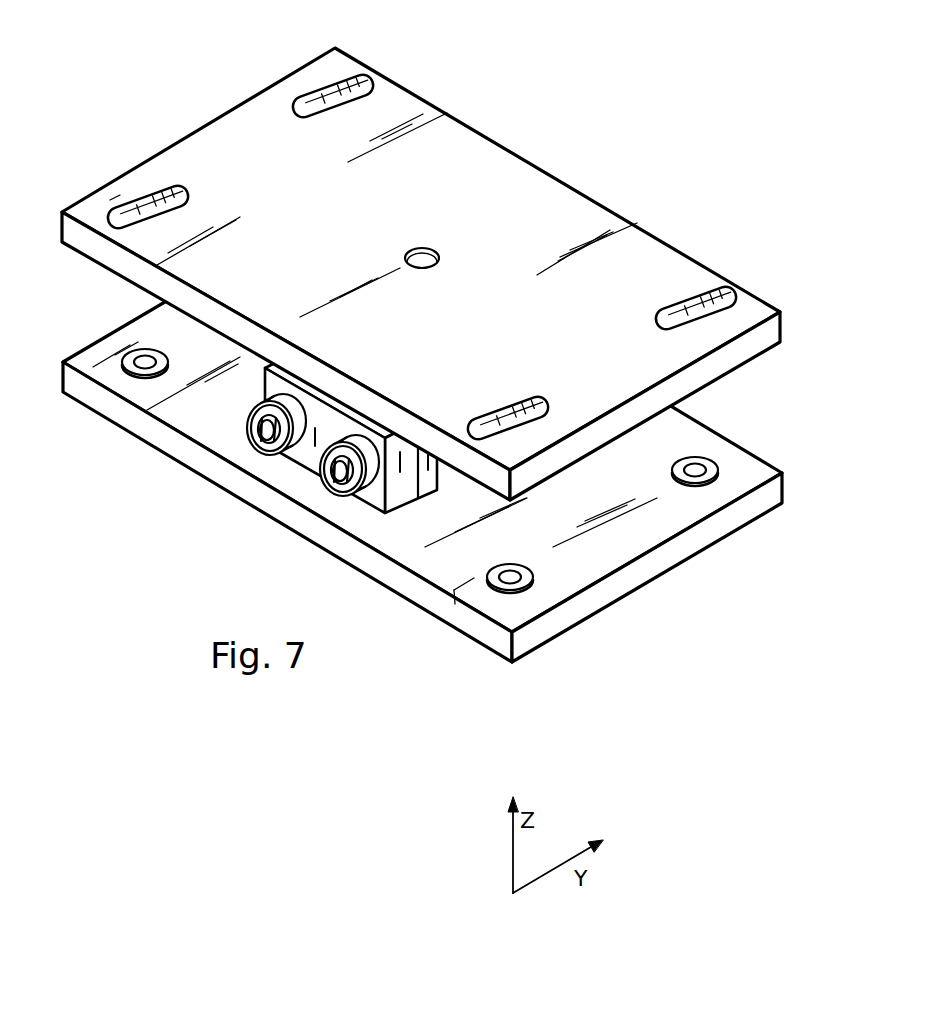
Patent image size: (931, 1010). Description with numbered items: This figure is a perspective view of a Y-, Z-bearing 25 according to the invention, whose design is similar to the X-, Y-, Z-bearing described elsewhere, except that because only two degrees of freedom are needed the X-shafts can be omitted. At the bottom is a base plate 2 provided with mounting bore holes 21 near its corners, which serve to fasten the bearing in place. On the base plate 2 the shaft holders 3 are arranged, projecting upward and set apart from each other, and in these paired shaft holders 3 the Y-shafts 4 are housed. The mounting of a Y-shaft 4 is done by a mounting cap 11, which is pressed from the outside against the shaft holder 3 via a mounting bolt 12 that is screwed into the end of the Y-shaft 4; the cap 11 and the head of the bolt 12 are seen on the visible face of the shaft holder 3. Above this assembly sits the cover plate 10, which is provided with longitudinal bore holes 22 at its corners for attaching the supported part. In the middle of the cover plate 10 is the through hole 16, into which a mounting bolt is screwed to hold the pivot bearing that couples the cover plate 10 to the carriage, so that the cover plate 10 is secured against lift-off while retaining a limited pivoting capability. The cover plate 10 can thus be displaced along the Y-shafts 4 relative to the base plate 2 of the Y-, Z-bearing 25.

The base plate 2 is at (422, 432).
The shaft holder 3 is at (395, 496).
The Y-shaft 4 is at (264, 506).
The cover plate 10 is at (421, 274).
The mounting cap 11 is at (228, 463).
The mounting bolt 12 is at (250, 437).
The through hole 16 is at (428, 261).
The mounting bore hole 21 is at (131, 370).
The longitudinal bore hole 22 is at (145, 200).
The Y-, Z-bearing 25 is at (422, 333).